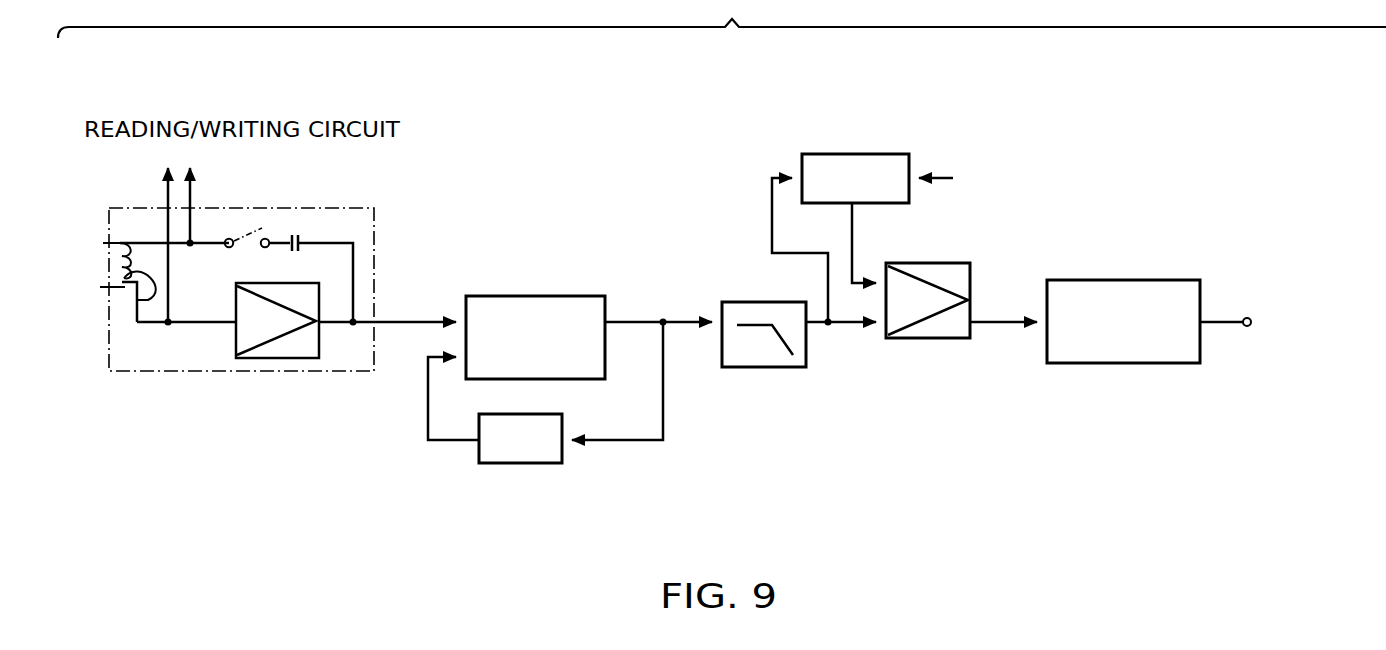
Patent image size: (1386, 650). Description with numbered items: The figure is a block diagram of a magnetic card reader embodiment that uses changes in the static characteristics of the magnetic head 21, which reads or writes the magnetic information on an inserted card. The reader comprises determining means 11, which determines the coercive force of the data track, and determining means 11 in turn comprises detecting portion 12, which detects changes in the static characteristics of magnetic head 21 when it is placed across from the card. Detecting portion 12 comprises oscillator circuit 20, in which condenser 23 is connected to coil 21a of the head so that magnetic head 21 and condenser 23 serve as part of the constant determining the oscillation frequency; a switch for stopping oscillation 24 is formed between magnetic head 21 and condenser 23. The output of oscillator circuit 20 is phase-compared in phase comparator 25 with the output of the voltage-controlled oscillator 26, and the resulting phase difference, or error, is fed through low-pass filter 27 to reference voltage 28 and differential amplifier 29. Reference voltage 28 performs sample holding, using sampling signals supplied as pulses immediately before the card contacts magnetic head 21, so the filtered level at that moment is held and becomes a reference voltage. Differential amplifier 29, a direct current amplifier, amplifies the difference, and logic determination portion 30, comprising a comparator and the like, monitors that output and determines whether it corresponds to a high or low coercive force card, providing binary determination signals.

The determining means 11 is at (652, 198).
The detecting portion 12 is at (192, 381).
The oscillator circuit 20 is at (303, 378).
The magnetic head 21 is at (104, 228).
The coil 21a is at (136, 303).
The condenser 23 is at (309, 230).
The switch for stopping oscillation 24 is at (254, 221).
The phase comparator 25 is at (542, 296).
The voltage-controlled oscillator 26 is at (506, 463).
The low-pass filter 27 is at (765, 367).
The reference voltage 28 is at (822, 157).
The differential amplifier 29 is at (935, 330).
The logic determination portion 30 is at (1098, 363).